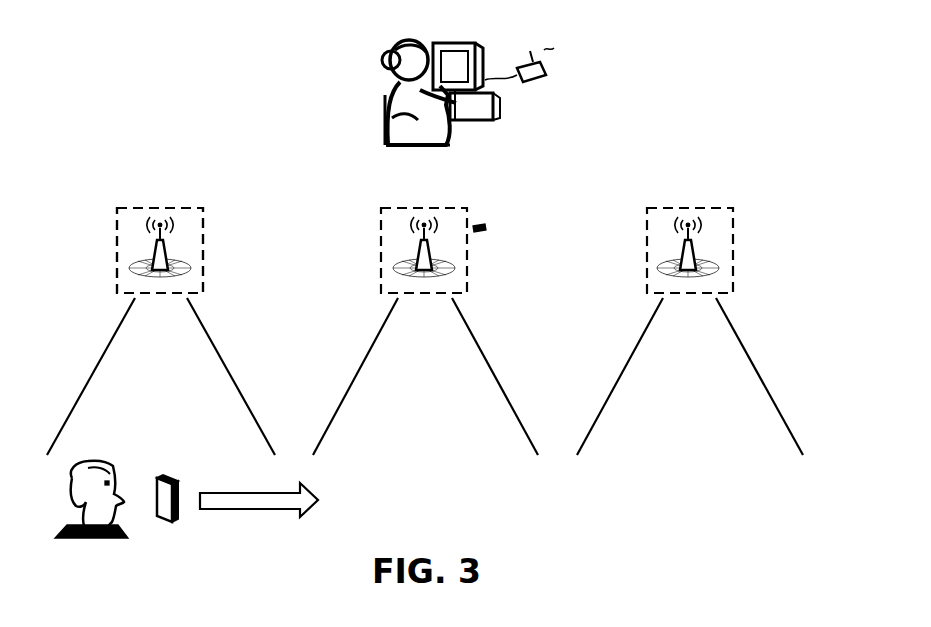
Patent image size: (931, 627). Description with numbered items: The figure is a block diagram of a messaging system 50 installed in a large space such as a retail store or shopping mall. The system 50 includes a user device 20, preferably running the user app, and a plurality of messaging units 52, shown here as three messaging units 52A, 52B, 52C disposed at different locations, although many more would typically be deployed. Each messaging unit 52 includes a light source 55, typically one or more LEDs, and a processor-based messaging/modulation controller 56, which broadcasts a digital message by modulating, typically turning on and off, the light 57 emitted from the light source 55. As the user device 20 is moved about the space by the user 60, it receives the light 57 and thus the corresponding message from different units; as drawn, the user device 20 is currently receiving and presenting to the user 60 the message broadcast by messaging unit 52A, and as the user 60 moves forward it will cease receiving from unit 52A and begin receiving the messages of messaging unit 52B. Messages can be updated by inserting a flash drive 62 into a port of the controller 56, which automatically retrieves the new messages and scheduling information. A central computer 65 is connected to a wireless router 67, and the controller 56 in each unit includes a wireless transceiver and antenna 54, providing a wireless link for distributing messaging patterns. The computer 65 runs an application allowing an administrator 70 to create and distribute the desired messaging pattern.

The messaging system 50 is at (176, 58).
The central computer 65 is at (452, 44).
The administrator 70 is at (392, 86).
The wireless router 67 is at (546, 77).
The messaging unit 52 is at (184, 222).
The first messaging unit 52A is at (121, 228).
The second messaging unit 52B is at (385, 228).
The third messaging unit 52C is at (649, 228).
The flash drive 62 is at (484, 224).
The antenna 54 is at (684, 236).
The light source 55 is at (708, 278).
The messaging/modulation controller 56 is at (698, 262).
The light 57 is at (649, 361).
The user 60 is at (101, 462).
The user device 20 is at (174, 478).